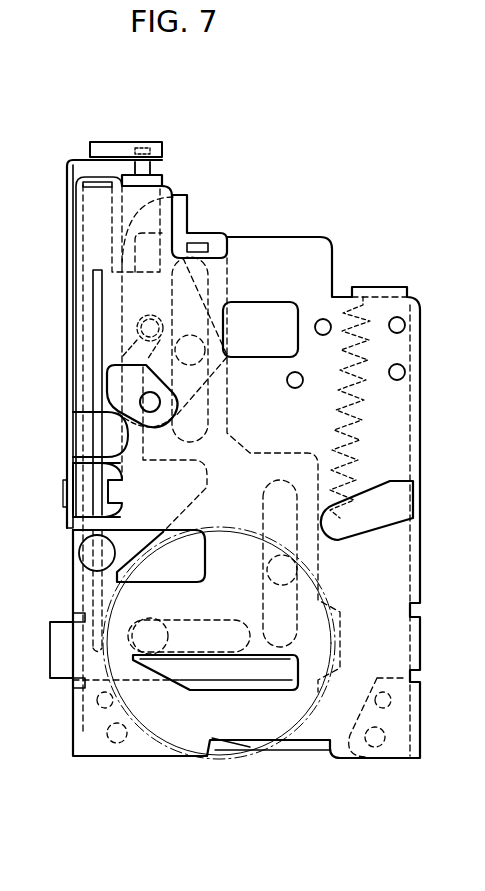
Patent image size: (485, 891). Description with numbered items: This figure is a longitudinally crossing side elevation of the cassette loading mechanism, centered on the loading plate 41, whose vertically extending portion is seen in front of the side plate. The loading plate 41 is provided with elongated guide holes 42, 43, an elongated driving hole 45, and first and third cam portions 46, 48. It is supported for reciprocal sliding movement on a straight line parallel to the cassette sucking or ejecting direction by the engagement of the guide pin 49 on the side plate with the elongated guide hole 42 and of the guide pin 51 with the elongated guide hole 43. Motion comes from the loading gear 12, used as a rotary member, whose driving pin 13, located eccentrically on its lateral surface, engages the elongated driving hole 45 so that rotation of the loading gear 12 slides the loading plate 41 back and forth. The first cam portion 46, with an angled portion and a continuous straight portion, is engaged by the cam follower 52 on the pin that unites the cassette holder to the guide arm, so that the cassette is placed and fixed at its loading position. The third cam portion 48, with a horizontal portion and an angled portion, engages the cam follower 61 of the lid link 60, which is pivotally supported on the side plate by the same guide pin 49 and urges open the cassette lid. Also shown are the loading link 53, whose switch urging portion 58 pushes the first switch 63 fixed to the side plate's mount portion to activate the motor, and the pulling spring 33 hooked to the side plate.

The loading gear 12 is at (297, 723).
The driving pin 13 is at (152, 645).
The pulling spring 33 is at (357, 407).
The loading plate 41 is at (93, 660).
The elongated guide hole 42 is at (177, 385).
The elongated guide hole 43 is at (287, 627).
The elongated driving hole 45 is at (200, 645).
The first cam portion 46 is at (133, 547).
The third cam portion 48 is at (135, 340).
The guide pin 49 is at (192, 342).
The guide pin 51 is at (290, 568).
The cam follower 52 is at (95, 568).
The loading link 53 is at (76, 157).
The switch urging portion 58 is at (124, 150).
The lid link 60 is at (187, 200).
The cam follower 61 is at (143, 322).
The first switch 63 is at (155, 180).